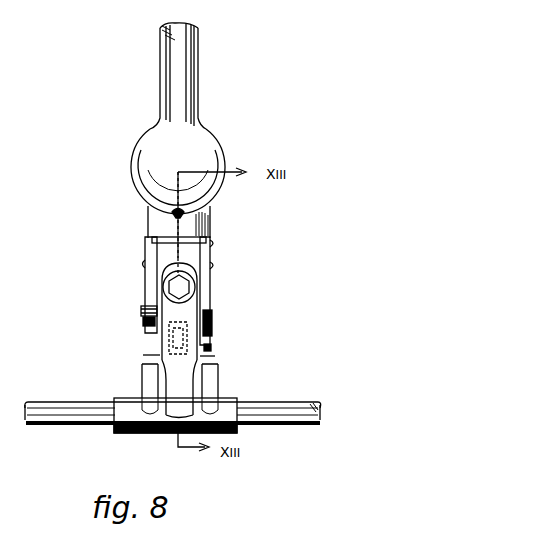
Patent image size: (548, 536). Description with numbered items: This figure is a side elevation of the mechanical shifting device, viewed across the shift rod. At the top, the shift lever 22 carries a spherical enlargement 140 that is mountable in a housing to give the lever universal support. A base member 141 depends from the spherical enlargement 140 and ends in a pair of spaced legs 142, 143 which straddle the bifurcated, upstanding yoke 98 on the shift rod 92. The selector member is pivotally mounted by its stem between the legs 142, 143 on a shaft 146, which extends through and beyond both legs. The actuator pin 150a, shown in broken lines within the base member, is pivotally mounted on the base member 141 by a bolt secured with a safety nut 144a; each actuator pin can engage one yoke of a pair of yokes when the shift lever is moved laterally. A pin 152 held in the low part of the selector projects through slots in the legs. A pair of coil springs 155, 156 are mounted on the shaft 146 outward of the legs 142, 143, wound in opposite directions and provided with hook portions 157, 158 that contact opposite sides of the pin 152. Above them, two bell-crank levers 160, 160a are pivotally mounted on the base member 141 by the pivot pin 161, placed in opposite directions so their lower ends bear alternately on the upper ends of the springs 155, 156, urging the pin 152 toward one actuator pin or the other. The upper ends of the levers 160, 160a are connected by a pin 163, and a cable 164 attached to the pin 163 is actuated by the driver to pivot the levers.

The shift lever 22 is at (183, 60).
The spherical enlargement 140 is at (200, 143).
The base member 141 is at (208, 224).
The cable 164 is at (176, 212).
The pin 163 is at (168, 238).
The bell-crank lever 160a is at (150, 285).
The safety nut 144a is at (205, 296).
The pivot pin 161 is at (212, 265).
The bell-crank lever 160 is at (186, 288).
The actuator pin 150a is at (176, 352).
The coil spring 156 is at (148, 312).
The shaft 146 is at (148, 326).
The coil spring 155 is at (212, 322).
The pin 152 is at (207, 348).
The hook portion 157 is at (207, 360).
The hook portion 158 is at (150, 355).
The leg 143 is at (155, 362).
The leg 142 is at (203, 358).
The shift rod 92 is at (290, 410).
The yoke 98 is at (118, 432).